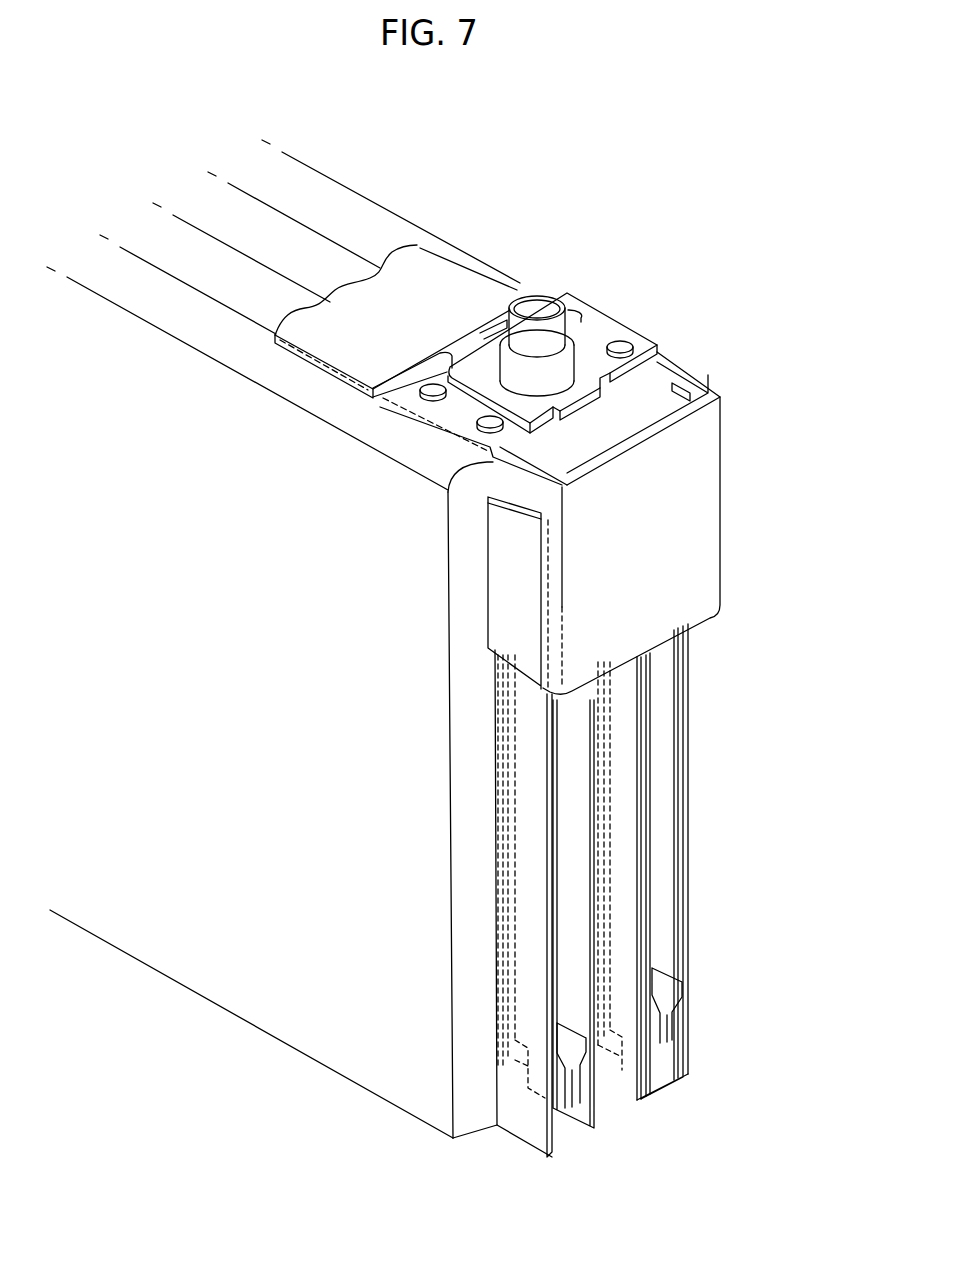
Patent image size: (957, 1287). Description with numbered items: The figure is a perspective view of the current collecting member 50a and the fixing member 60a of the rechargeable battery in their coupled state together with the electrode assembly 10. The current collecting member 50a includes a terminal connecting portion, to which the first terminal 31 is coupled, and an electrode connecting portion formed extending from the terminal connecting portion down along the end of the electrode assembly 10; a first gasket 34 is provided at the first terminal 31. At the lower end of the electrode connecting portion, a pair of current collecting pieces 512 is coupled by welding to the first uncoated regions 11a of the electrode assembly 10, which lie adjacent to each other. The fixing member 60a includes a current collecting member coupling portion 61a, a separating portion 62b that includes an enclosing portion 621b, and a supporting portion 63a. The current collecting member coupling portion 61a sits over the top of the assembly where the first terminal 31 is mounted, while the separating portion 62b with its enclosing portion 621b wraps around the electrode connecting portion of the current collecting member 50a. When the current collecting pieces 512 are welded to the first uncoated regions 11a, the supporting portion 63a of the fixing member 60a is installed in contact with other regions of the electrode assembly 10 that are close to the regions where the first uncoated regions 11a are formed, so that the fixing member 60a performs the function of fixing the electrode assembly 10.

The electrode assembly 10 is at (207, 998).
The first uncoated regions 11a is at (647, 1080).
The first terminal 31 is at (536, 300).
The first gasket 34 is at (557, 370).
The current collecting member 50a is at (684, 778).
The current collecting pieces 512 is at (568, 912).
The fixing member 60a is at (481, 259).
The current collecting member coupling portion 61a is at (418, 272).
The separating portion 62b is at (693, 515).
The enclosing portion 621b is at (518, 620).
The supporting portion 63a is at (499, 1070).